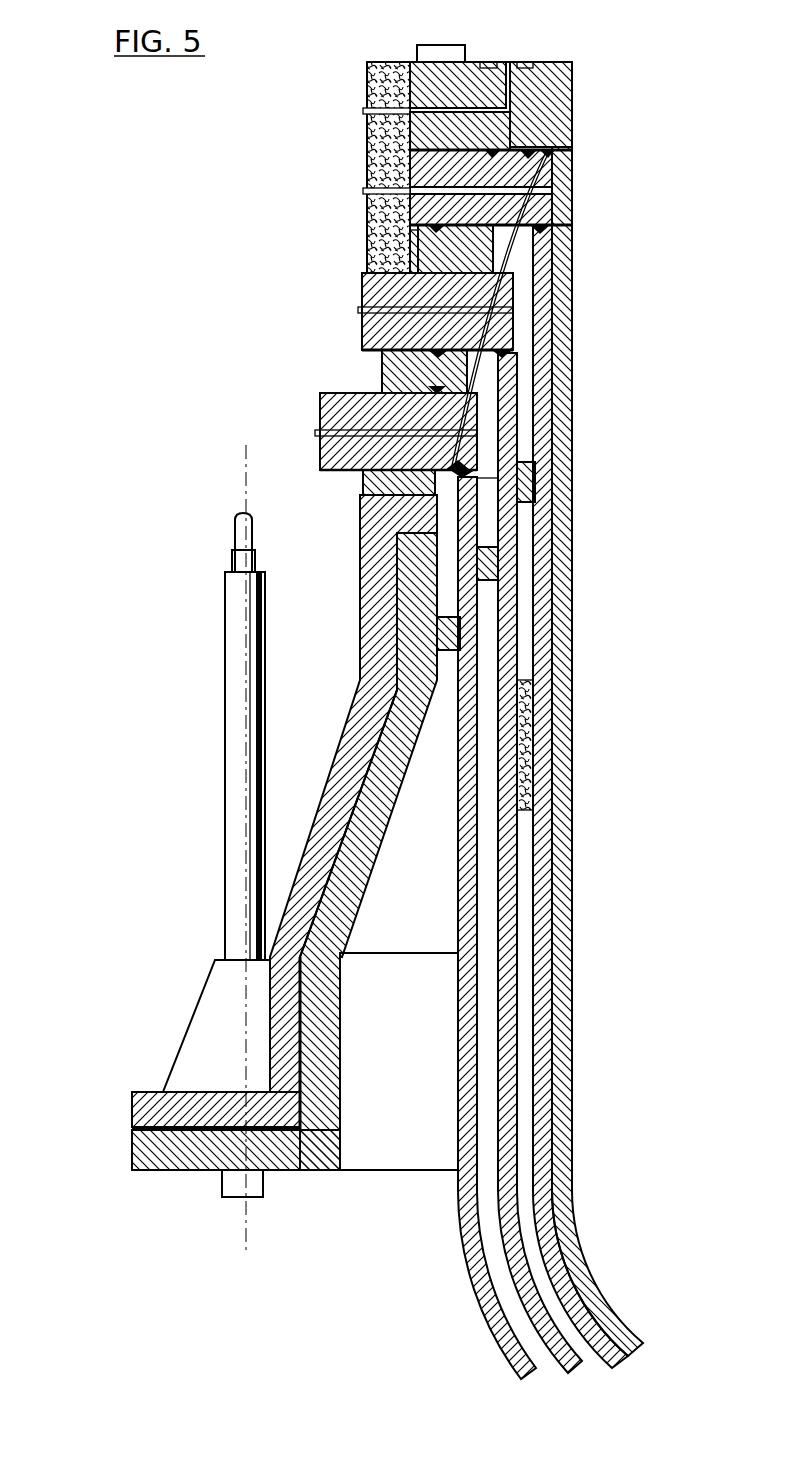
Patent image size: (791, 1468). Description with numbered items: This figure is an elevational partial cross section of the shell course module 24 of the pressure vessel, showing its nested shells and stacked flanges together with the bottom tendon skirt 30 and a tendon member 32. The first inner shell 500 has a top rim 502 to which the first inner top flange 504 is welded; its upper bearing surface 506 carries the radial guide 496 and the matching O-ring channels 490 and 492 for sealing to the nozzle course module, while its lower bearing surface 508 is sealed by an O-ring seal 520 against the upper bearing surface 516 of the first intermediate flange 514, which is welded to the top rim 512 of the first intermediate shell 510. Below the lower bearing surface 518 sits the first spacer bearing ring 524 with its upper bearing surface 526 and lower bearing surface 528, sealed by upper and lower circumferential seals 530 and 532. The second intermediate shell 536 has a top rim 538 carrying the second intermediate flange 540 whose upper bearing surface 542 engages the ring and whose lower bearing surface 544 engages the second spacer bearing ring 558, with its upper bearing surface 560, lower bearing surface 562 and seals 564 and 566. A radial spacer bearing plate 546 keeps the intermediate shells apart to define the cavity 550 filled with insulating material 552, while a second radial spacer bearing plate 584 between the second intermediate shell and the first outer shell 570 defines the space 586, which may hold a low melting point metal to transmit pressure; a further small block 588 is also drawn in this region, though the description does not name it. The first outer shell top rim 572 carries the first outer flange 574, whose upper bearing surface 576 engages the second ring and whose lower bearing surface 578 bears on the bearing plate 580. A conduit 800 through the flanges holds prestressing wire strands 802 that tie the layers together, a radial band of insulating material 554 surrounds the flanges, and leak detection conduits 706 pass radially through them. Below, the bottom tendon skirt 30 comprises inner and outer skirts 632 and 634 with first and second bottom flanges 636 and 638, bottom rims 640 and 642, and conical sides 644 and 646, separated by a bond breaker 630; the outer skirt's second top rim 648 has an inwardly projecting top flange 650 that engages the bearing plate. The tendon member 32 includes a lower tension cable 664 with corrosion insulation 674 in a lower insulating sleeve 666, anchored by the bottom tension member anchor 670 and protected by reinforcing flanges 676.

The shell course module 24 is at (136, 322).
The bottom tendon skirt 30 is at (397, 1175).
The tension or tendon members 32 is at (222, 688).
The O-ring channel 490 is at (533, 64).
The O-ring channel 492 is at (489, 62).
The radial guide 496 is at (440, 45).
The first inner shell 500 is at (573, 415).
The top rim 502 is at (560, 151).
The first inner top flange 504 is at (560, 104).
The upper bearing surface 506 is at (573, 63).
The lower bearing surface 508 is at (405, 158).
The first intermediate shell 510 is at (548, 500).
The top rim 512 is at (556, 226).
The first intermediate flange 514 is at (560, 177).
The upper bearing surface 516 is at (410, 142).
The lower bearing surface 518 is at (408, 232).
The O-ring seal 520 is at (482, 148).
The first spacer bearing ring 524 is at (416, 258).
The upper bearing surface 526 is at (515, 203).
The lower bearing surface 528 is at (437, 286).
The upper circumferential seal 530 is at (481, 209).
The lower circumferential seal 532 is at (437, 311).
The second intermediate shell 536 is at (512, 677).
The top rim 538 is at (522, 357).
The second intermediate flange 540 is at (360, 321).
The upper bearing surface 542 is at (366, 278).
The lower bearing surface 544 is at (375, 358).
The radial spacer bearing plate 546 is at (535, 455).
The first intermediate space or cavity 550 is at (525, 623).
The high temperature insulating material 552 is at (540, 748).
The radial band of insulating material 554 is at (372, 68).
The second spacer bearing ring 558 is at (390, 372).
The upper bearing surface 560 is at (415, 338).
The lower bearing surface 562 is at (398, 431).
The upper circumferential seal 564 is at (437, 328).
The lower circumferential seal 566 is at (398, 406).
The first outer shell 570 is at (468, 880).
The top rim 572 is at (545, 470).
The first outer flange 574 is at (326, 455).
The upper bearing surface 576 is at (325, 400).
The lower bearing surface 578 is at (330, 470).
The bearing plate 580 is at (368, 482).
The second radial spacer bearing plate or ring 584 is at (500, 562).
The space or cavity 586 is at (488, 930).
The bushing 588 is at (440, 635).
The bond breaker 630 is at (346, 828).
The inner bottom tendon skirt 632 is at (358, 917).
The outer bottom tendon skirt 634 is at (338, 758).
The first bottom flange 636 is at (132, 1160).
The second bottom flange 638 is at (132, 1105).
The first bottom rim 640 is at (333, 1036).
The second bottom rim 642 is at (282, 1050).
The first conical side 644 is at (385, 790).
The second conical side 646 is at (358, 700).
The second top rim 648 is at (395, 515).
The top flange 650 is at (405, 553).
The lower tension cable 664 is at (237, 548).
The lower insulating sleeve 666 is at (225, 615).
The bottom tension member anchor 670 is at (263, 1190).
The corrosion insulation 674 is at (232, 574).
The reinforcing flanges 676 is at (215, 990).
The leak detection conduits 706 is at (400, 110).
The conduit 800 is at (540, 295).
The prestressing wire strands 802 is at (535, 252).